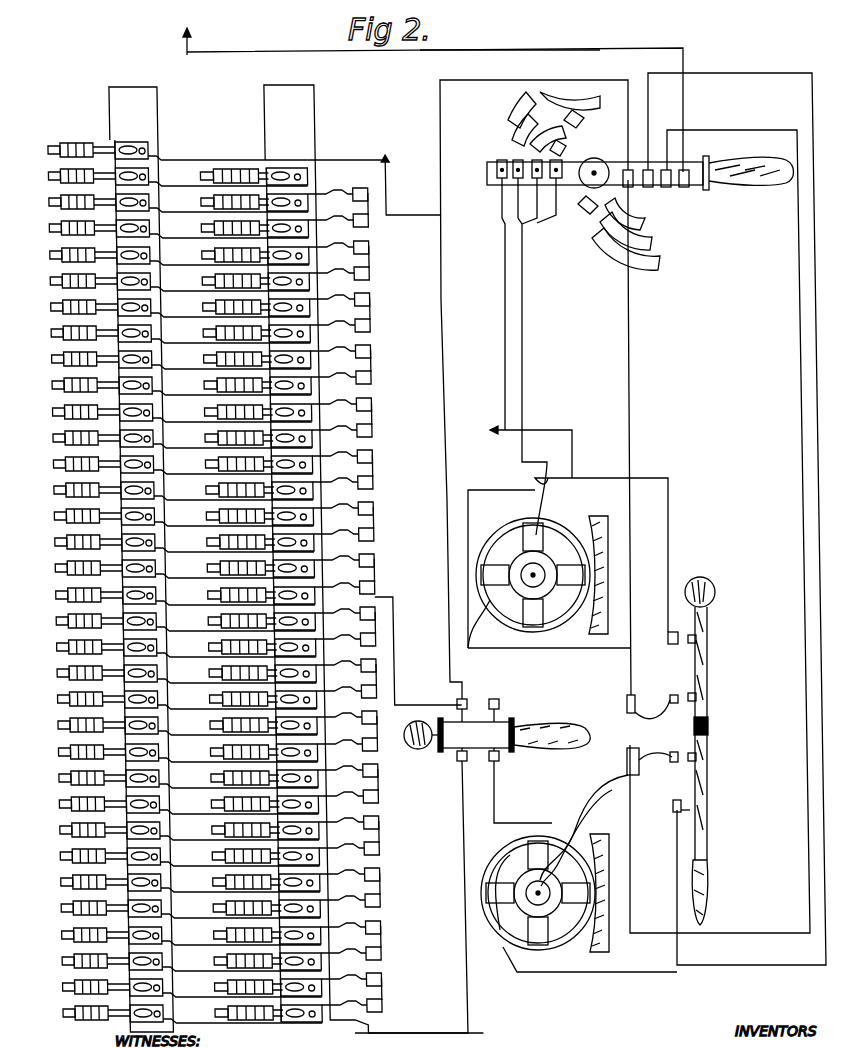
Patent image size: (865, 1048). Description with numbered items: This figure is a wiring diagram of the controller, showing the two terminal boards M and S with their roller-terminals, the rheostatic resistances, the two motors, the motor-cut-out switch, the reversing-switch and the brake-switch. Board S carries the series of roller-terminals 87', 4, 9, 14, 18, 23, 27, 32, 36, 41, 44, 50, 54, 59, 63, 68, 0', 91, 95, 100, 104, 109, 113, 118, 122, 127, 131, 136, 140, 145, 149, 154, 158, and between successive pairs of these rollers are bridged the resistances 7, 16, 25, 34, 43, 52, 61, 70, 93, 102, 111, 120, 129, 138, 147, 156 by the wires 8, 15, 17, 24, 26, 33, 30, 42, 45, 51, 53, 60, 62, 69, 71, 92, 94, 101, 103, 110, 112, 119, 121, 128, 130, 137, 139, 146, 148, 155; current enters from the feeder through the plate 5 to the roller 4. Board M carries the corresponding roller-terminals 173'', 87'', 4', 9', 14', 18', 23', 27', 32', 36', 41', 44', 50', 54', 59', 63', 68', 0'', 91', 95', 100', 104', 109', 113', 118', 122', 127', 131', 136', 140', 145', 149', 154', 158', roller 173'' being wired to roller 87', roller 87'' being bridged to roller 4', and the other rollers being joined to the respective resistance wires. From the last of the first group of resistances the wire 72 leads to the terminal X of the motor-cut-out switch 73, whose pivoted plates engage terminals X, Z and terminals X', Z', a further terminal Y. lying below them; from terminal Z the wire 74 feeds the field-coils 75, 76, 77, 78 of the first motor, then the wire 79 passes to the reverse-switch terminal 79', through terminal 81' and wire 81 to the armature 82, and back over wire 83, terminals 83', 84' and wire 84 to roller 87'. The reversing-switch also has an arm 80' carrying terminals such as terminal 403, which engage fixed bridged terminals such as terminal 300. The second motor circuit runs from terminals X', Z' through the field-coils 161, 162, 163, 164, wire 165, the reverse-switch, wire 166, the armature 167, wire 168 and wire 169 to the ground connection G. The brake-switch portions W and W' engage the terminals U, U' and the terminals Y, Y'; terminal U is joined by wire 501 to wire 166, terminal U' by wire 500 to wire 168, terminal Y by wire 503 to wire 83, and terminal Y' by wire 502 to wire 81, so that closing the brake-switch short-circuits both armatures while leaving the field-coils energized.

The roller-terminal 173'' is at (160, 150).
The roller-terminal 87'' is at (162, 176).
The roller-terminal 4' is at (168, 202).
The roller-terminal 9' is at (168, 228).
The roller-terminal 14' is at (165, 255).
The roller-terminal 18' is at (165, 281).
The roller-terminal 23' is at (166, 307).
The roller-terminal 27' is at (166, 333).
The roller-terminal 32' is at (167, 359).
The roller-terminal 36' is at (167, 385).
The roller-terminal 41' is at (167, 412).
The roller-terminal 44' is at (168, 438).
The roller-terminal 50' is at (168, 464).
The roller-terminal 54' is at (169, 490).
The roller-terminal 59' is at (169, 516).
The roller-terminal 63' is at (170, 542).
The roller-terminal 68' is at (170, 568).
The roller-terminal 0'' is at (175, 595).
The roller-terminal 91' is at (171, 621).
The roller-terminal 95' is at (172, 647).
The roller-terminal 100' is at (168, 673).
The roller-terminal 104' is at (168, 699).
The roller-terminal 109' is at (169, 725).
The roller-terminal 113' is at (169, 752).
The roller-terminal 118' is at (170, 778).
The roller-terminal 122' is at (170, 804).
The roller-terminal 127' is at (171, 830).
The roller-terminal 131' is at (171, 856).
The roller-terminal 136' is at (172, 882).
The roller-terminal 140' is at (172, 908).
The roller-terminal 145' is at (173, 935).
The roller-terminal 149' is at (173, 961).
The roller-terminal 154' is at (173, 987).
The roller-terminal 158' is at (174, 1013).
The roller-terminal 87' is at (239, 176).
The roller-terminal 4 is at (245, 202).
The roller-terminal 9 is at (246, 228).
The roller-terminal 14 is at (244, 255).
The roller-terminal 18 is at (244, 281).
The roller-terminal 23 is at (245, 307).
The roller-terminal 27 is at (245, 333).
The roller-terminal 32 is at (246, 359).
The roller-terminal 36 is at (246, 385).
The roller-terminal 41 is at (246, 412).
The roller-terminal 44 is at (247, 438).
The roller-terminal 50 is at (247, 464).
The roller-terminal 54 is at (248, 490).
The roller-terminal 59 is at (248, 516).
The roller-terminal 63 is at (249, 542).
The roller-terminal 68 is at (249, 568).
The roller-terminal 0' is at (251, 595).
The roller-terminal 91 is at (250, 621).
The roller-terminal 95 is at (251, 647).
The roller-terminal 100 is at (248, 673).
The roller-terminal 104 is at (248, 699).
The roller-terminal 109 is at (249, 725).
The roller-terminal 113 is at (249, 752).
The roller-terminal 118 is at (250, 778).
The roller-terminal 122 is at (250, 804).
The roller-terminal 127 is at (251, 830).
The roller-terminal 131 is at (251, 856).
The roller-terminal 136 is at (252, 882).
The roller-terminal 140 is at (252, 908).
The roller-terminal 145 is at (253, 935).
The roller-terminal 149 is at (253, 961).
The roller-terminal 154 is at (253, 987).
The roller-terminal 158 is at (254, 1013).
The plate 5 is at (338, 194).
The wire 8 is at (338, 220).
The resistance 7 is at (374, 202).
The wire 15 is at (339, 247).
The wire 17 is at (339, 273).
The resistance 16 is at (379, 257).
The wire 24 is at (340, 299).
The wire 26 is at (340, 325).
The resistance 25 is at (380, 309).
The wire 33 is at (340, 351).
The contact 30 is at (341, 377).
The resistance 34 is at (381, 363).
The wire 42 is at (341, 404).
The contact 45 is at (342, 430).
The resistance 43 is at (381, 416).
The wire 51 is at (342, 456).
The wire 53 is at (343, 482).
The resistance 52 is at (382, 467).
The wire 60 is at (343, 508).
The wire 62 is at (344, 534).
The resistance 61 is at (383, 519).
The wire 69 is at (344, 560).
The wire 71 is at (345, 587).
The resistance 70 is at (384, 571).
The wire 92 is at (345, 613).
The wire 94 is at (345, 639).
The resistance 93 is at (385, 625).
The wire 101 is at (346, 665).
The wire 103 is at (346, 691).
The resistance 102 is at (372, 664).
The wire 110 is at (347, 717).
The wire 112 is at (347, 744).
The resistance 111 is at (392, 727).
The wire 119 is at (348, 770).
The wire 121 is at (348, 796).
The resistance 120 is at (392, 780).
The wire 128 is at (349, 822).
The wire 130 is at (349, 848).
The resistance 129 is at (393, 832).
The wire 137 is at (350, 874).
The wire 139 is at (350, 900).
The resistance 138 is at (394, 884).
The wire 146 is at (350, 927).
The wire 148 is at (351, 953).
The resistance 147 is at (395, 937).
The wire 155 is at (351, 979).
The resistance 156 is at (395, 989).
The wire 72 is at (386, 686).
The terminal board M is at (108, 86).
The terminal board S is at (262, 90).
The generator lead G is at (433, 94).
The wire 169 is at (418, 54).
The wire 165 is at (438, 82).
The wire 166 is at (745, 74).
The wire 168 is at (736, 128).
The wire 84 is at (374, 184).
The arm of reverse-switch 80' is at (628, 160).
The reverse-switch terminal 79' is at (507, 245).
The reverse-switch terminal 81' is at (535, 245).
The reverse-switch terminal 83' is at (559, 142).
The reverse-switch terminal 84' is at (559, 140).
The terminal 403 is at (648, 170).
The terminal 300 is at (700, 238).
The wire 79 is at (568, 517).
The wire 81 is at (538, 365).
The wire 83 is at (560, 467).
The armature 82 is at (548, 589).
The field-coil 75 is at (533, 575).
The field-coil 76 is at (491, 577).
The field-coil 77 is at (531, 617).
The field-coil 78 is at (567, 577).
The wire 74 is at (472, 650).
The wire 502 is at (670, 522).
The contact Y' is at (671, 639).
The wire 503 is at (631, 663).
The contact Y is at (661, 704).
The wire 500 is at (645, 752).
The terminal U' is at (674, 768).
The terminal U is at (673, 806).
The wire 501 is at (676, 847).
The lever switch 73 is at (500, 706).
The terminal X is at (453, 707).
The terminal Z is at (500, 707).
The terminal X' is at (411, 890).
The terminal Z' is at (520, 785).
The contact Y. is at (480, 760).
The field-coil 161 is at (579, 904).
The field-coil 162 is at (497, 895).
The field-coil 163 is at (537, 935).
The field-coil 164 is at (574, 895).
The armature 167 is at (545, 882).
The brake-switch portion W' is at (711, 718).
The brake-switch portion W is at (715, 821).